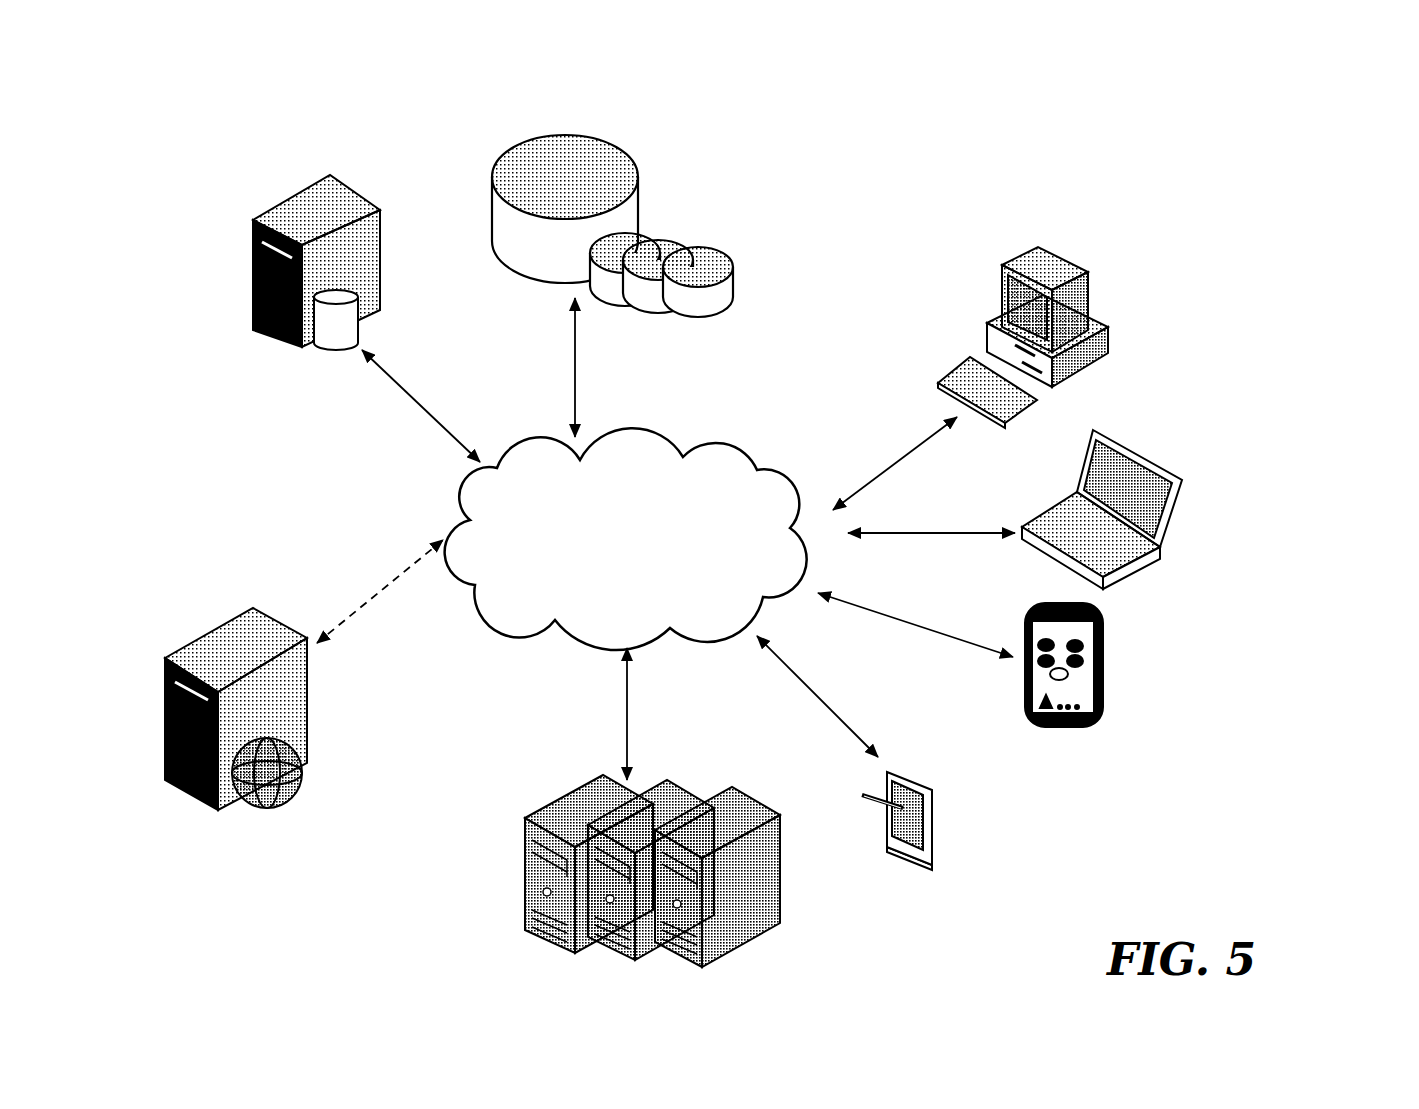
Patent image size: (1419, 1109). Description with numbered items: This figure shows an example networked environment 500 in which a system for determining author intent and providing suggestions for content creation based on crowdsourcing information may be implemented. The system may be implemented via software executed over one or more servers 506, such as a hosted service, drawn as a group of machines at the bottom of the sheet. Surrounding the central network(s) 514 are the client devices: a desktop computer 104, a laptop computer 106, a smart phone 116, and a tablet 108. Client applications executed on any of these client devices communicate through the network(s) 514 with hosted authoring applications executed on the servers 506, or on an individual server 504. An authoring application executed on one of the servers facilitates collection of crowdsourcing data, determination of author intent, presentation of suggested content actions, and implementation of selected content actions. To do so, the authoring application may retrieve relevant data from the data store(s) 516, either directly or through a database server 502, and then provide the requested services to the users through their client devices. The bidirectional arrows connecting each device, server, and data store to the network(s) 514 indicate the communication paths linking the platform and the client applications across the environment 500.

The network environment 500 is at (1267, 127).
The database server 502 is at (318, 362).
The individual server 504 is at (200, 626).
The servers 506 is at (567, 785).
The network(s) 514 is at (637, 416).
The data store(s) 516 is at (644, 168).
The desktop computer 104 is at (1108, 230).
The laptop computer 106 is at (1163, 440).
The tablet 108 is at (939, 773).
The smart phone 116 is at (1114, 628).